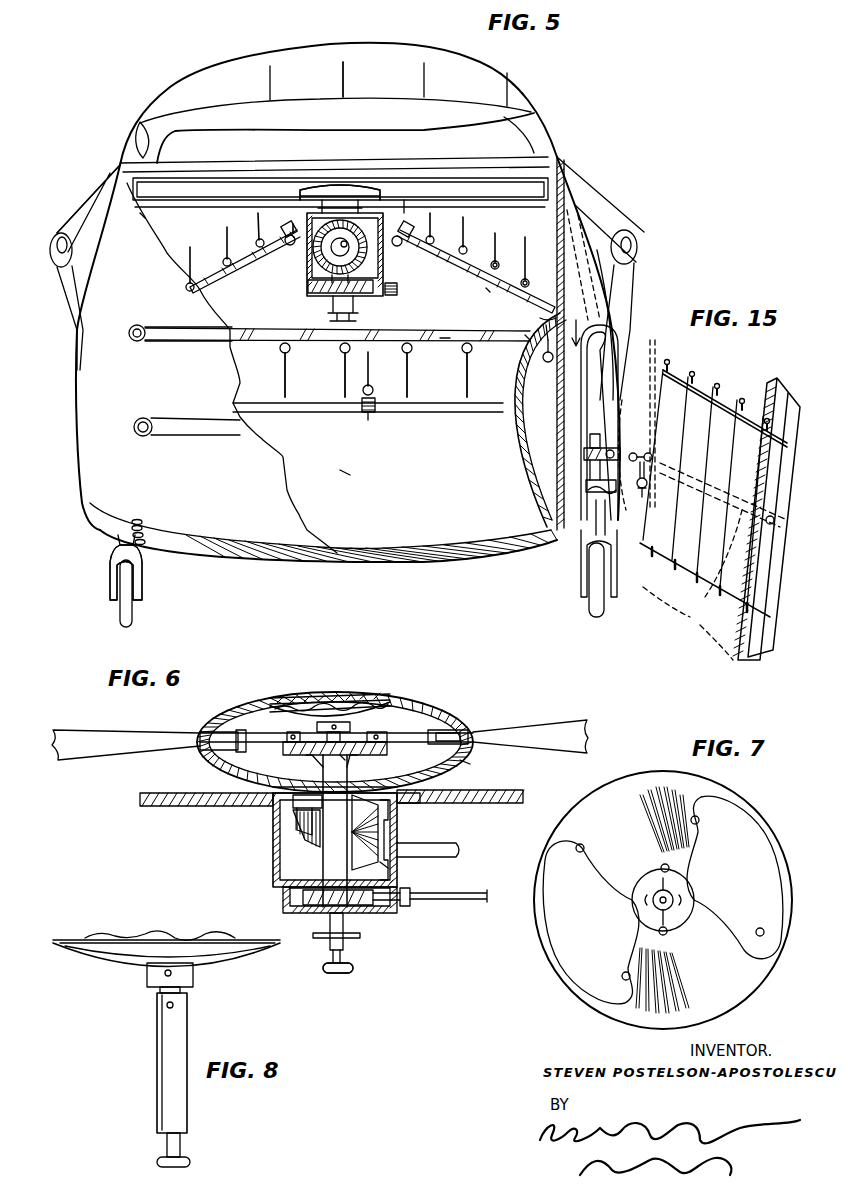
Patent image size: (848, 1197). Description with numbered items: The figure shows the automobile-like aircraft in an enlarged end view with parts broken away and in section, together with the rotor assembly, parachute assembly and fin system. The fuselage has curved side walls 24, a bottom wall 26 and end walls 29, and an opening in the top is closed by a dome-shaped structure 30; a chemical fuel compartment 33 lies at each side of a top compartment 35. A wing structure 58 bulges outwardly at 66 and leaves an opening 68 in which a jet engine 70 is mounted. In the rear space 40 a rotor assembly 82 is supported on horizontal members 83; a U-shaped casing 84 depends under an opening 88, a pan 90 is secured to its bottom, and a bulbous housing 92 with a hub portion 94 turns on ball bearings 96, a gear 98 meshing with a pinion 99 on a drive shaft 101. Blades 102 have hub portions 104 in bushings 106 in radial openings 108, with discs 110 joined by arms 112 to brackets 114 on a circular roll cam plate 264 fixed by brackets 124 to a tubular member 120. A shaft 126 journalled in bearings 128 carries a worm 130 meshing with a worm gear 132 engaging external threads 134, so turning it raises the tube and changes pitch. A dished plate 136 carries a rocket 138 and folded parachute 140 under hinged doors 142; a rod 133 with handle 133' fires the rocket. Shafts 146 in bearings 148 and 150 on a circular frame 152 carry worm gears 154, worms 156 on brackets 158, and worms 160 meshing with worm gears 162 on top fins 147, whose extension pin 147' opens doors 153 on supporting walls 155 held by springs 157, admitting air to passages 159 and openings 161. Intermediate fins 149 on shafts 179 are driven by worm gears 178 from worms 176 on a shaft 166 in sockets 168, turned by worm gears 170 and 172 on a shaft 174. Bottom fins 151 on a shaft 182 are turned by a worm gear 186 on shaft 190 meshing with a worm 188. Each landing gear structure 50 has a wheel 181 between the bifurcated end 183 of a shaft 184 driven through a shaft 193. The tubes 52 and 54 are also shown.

In FIG. 5, the side wall 24 is at (578, 210).
In FIG. 5, the bottom wall 26 is at (478, 560).
In FIG. 5, the end wall 29 is at (118, 472).
In FIG. 5, the dome-shaped structure 30 is at (356, 43).
In FIG. 5, the chemical fuel compartment 33 is at (222, 100).
In FIG. 5, the top compartment 35 is at (392, 90).
In FIG. 5, the rear space 40 is at (296, 305).
In FIG. 5, the combined landing gear and driving gear structure 50 is at (138, 626).
In FIG. 5, the upper tube 52 is at (196, 345).
In FIG. 5, the lower tube 54 is at (128, 418).
In FIG. 5, the wing structure 58 is at (56, 328).
In FIG. 5, the bulge 66 is at (48, 238).
In FIG. 5, the opening 68 is at (78, 283).
In FIG. 5, the jet engine 70 is at (52, 252).
In FIG. 5, the rotor assembly 82 is at (362, 182).
In FIG. 5, the horizontal member 83 is at (160, 210).
In FIG. 6, the horizontal member 83 is at (172, 808).
In FIG. 5, the casing 84 is at (307, 255).
In FIG. 6, the casing 84 is at (273, 882).
In FIG. 6, the opening 88 is at (400, 790).
In FIG. 6, the pan 90 is at (388, 924).
In FIG. 5, the housing 92 is at (312, 182).
In FIG. 6, the hub portion 94 is at (296, 820).
In FIG. 6, the ball bearings 96 is at (400, 826).
In FIG. 6, the gear 98 is at (290, 842).
In FIG. 6, the pinion 99 is at (390, 870).
In FIG. 6, the drive shaft 101 is at (446, 842).
In FIG. 5, the blade 102 is at (206, 178).
In FIG. 6, the blade 102 is at (88, 708).
In FIG. 6, the hub portion 104 is at (200, 730).
In FIG. 6, the bushing 106 is at (232, 728).
In FIG. 6, the radial opening 108 is at (470, 762).
In FIG. 6, the disc 110 is at (242, 748).
In FIG. 6, the arm 112 is at (242, 712).
In FIG. 6, the bracket 114 is at (380, 730).
In FIG. 5, the tubular member 120 is at (306, 270).
In FIG. 6, the tubular member 120 is at (323, 866).
In FIG. 8, the tubular member 120 is at (182, 1040).
In FIG. 6, the bracket 124 is at (316, 760).
In FIG. 6, the shaft 126 is at (456, 906).
In FIG. 6, the bearing 128 is at (283, 910).
In FIG. 6, the worm 130 is at (318, 918).
In FIG. 6, the worm gear 132 is at (358, 925).
In FIG. 6, the rod 133 is at (359, 966).
In FIG. 8, the rod 133 is at (198, 1142).
In FIG. 6, the handle 133' is at (334, 984).
In FIG. 8, the handle 133' is at (197, 1161).
In FIG. 6, the external threads 134 is at (330, 945).
In FIG. 8, the external threads 134 is at (160, 1100).
In FIG. 6, the dished shaped plate 136 is at (280, 708).
In FIG. 7, the dished shaped plate 136 is at (624, 790).
In FIG. 8, the dished shaped plate 136 is at (86, 962).
In FIG. 6, the rocket 138 is at (336, 706).
In FIG. 7, the rocket 138 is at (676, 894).
In FIG. 8, the rocket 138 is at (160, 930).
In FIG. 6, the parachute 140 is at (314, 690).
In FIG. 7, the parachute 140 is at (770, 880).
In FIG. 8, the parachute 140 is at (112, 940).
In FIG. 6, the hinged door 142 is at (300, 705).
In FIG. 8, the hinged door 142 is at (160, 935).
In FIG. 5, the shaft 146 is at (222, 270).
In FIG. 15, the shaft 146 is at (722, 590).
In FIG. 5, the top fin 147 is at (436, 401).
In FIG. 5, the extension pin 147' is at (543, 260).
In FIG. 5, the bearing 148 is at (270, 182).
In FIG. 5, the intermediate fin 149 is at (410, 384).
In FIG. 5, the bearing 150 is at (530, 284).
In FIG. 5, the bottom fin 151 is at (365, 482).
In FIG. 5, the circular frame 152 is at (504, 462).
In FIG. 5, the door 153 is at (610, 212).
In FIG. 15, the door 153 is at (787, 382).
In FIG. 5, the worm gear 154 is at (408, 182).
In FIG. 15, the worm gear 154 is at (652, 412).
In FIG. 5, the vertical supporting wall 155 is at (570, 170).
In FIG. 5, the worm 156 is at (402, 250).
In FIG. 5, the spring 157 is at (612, 296).
In FIG. 5, the bracket 158 is at (395, 278).
In FIG. 5, the passage 159 is at (581, 368).
In FIG. 5, the worm 160 is at (486, 290).
In FIG. 5, the opening 161 is at (584, 392).
In FIG. 5, the worm gear 162 is at (493, 262).
In FIG. 5, the shaft 166 is at (440, 338).
In FIG. 5, the socket 168 is at (525, 338).
In FIG. 5, the worm gear 170 is at (560, 318).
In FIG. 5, the worm gear 172 is at (556, 380).
In FIG. 5, the shaft 174 is at (550, 362).
In FIG. 5, the worm 176 is at (406, 328).
In FIG. 5, the worm gear 178 is at (280, 352).
In FIG. 5, the shaft 179 is at (340, 354).
In FIG. 5, the wheel 181 is at (120, 610).
In FIG. 5, the shaft 182 is at (368, 384).
In FIG. 5, the bifurcated end 183 is at (110, 573).
In FIG. 5, the shaft 184 is at (115, 544).
In FIG. 5, the worm gear 186 is at (368, 422).
In FIG. 5, the worm 188 is at (375, 390).
In FIG. 5, the shaft 190 is at (296, 422).
In FIG. 5, the shaft 193 is at (603, 447).
In FIG. 6, the circular roll cam plate 264 is at (352, 758).